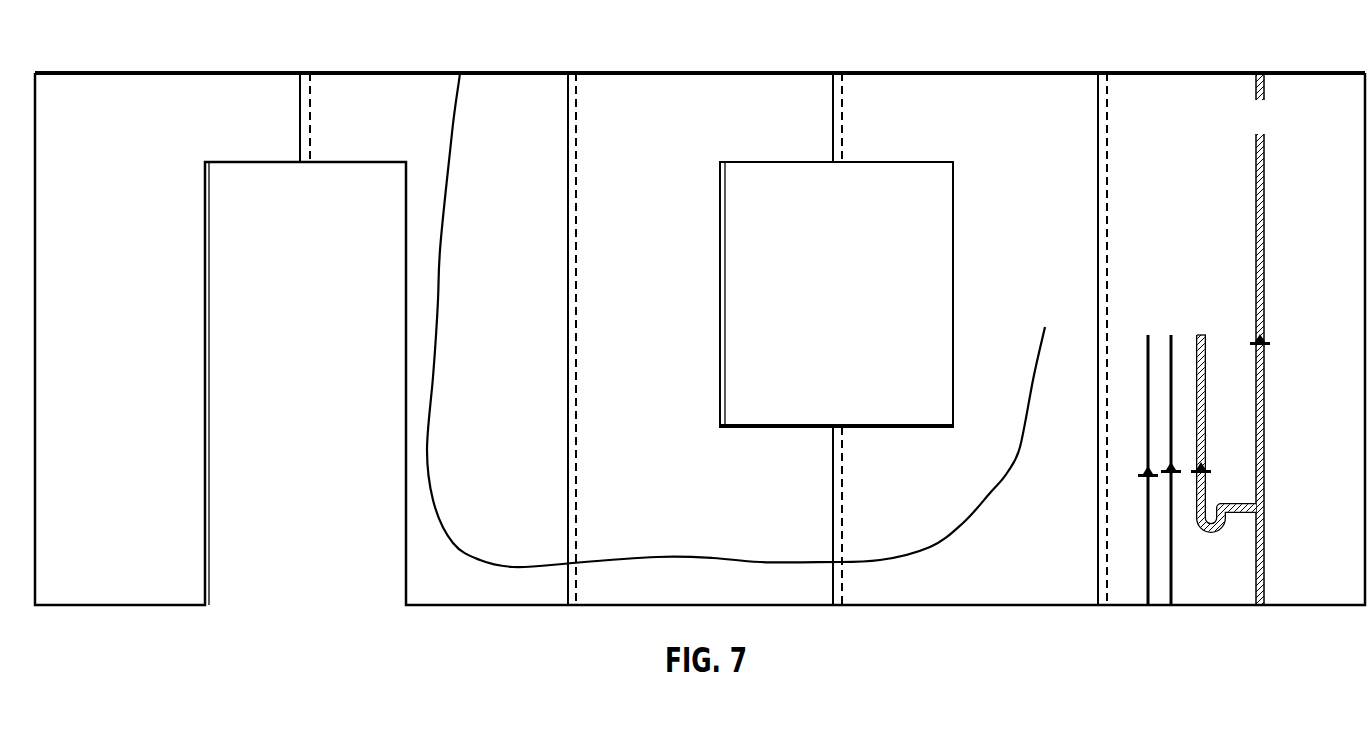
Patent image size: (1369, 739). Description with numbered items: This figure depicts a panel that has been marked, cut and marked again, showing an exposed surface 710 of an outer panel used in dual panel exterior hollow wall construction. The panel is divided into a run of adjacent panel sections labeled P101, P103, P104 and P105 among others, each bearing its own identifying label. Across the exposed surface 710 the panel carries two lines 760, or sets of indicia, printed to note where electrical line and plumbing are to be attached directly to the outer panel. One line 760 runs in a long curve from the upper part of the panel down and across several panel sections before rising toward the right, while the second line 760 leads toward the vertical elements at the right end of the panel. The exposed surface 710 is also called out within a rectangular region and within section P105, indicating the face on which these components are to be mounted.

The exposed face of the inside panel run 710 is at (858, 293).
The line or indicia for direct attachment of components 760 is at (657, 557).
The panel P101 LEF-D P101 is at (195, 117).
The panel P103 LEF-D P103 is at (738, 339).
The panel P104 LEF-D P104 is at (1006, 339).
The panel P105 LEF-D P105 is at (1229, 339).